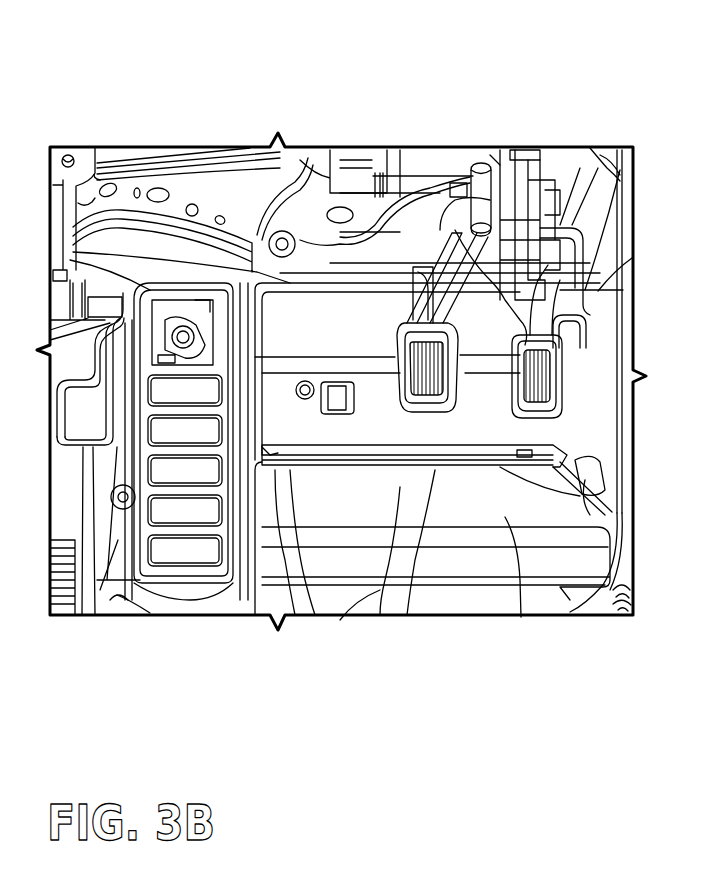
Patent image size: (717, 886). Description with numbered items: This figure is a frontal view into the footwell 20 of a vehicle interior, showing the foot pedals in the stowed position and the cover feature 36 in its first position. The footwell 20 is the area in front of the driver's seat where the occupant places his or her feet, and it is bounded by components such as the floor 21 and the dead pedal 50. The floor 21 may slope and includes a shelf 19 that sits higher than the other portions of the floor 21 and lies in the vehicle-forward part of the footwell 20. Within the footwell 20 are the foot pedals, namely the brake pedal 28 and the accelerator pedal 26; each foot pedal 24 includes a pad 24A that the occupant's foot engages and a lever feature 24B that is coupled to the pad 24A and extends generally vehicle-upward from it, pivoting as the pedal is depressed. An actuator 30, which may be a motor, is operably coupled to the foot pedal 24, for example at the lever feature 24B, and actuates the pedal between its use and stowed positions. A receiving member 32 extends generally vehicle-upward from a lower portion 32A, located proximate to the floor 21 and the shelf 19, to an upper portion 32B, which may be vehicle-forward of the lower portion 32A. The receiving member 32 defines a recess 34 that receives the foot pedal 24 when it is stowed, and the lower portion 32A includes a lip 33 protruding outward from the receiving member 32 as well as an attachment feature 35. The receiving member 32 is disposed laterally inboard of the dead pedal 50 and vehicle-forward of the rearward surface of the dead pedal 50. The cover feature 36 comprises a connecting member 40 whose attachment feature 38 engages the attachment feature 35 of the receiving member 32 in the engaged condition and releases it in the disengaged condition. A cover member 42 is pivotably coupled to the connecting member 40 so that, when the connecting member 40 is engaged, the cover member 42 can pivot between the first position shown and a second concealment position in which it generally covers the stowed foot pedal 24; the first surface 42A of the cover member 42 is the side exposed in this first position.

The shelf 19 is at (240, 560).
The footwell 20 is at (553, 593).
The floor 21 is at (482, 600).
The foot pedal 24 is at (452, 360).
The pad 24A is at (555, 371).
The lever feature 24B is at (431, 265).
The accelerator pedal 26 is at (567, 411).
The brake pedal 28 is at (393, 340).
The actuator 30 is at (452, 163).
The receiving member 32 is at (306, 332).
The lower portion 32A is at (583, 495).
The upper portion 32B is at (293, 270).
The lip 33 is at (567, 458).
The recess 34 is at (503, 230).
The attachment feature 35 is at (339, 615).
The cover feature 36 is at (358, 512).
The attachment feature 38 is at (313, 477).
The connecting member 40 is at (437, 470).
The cover member 42 is at (403, 487).
The first surface 42A is at (520, 520).
The dead pedal 50 is at (178, 437).